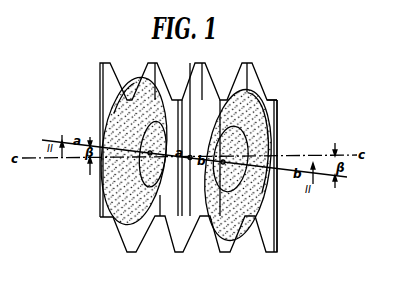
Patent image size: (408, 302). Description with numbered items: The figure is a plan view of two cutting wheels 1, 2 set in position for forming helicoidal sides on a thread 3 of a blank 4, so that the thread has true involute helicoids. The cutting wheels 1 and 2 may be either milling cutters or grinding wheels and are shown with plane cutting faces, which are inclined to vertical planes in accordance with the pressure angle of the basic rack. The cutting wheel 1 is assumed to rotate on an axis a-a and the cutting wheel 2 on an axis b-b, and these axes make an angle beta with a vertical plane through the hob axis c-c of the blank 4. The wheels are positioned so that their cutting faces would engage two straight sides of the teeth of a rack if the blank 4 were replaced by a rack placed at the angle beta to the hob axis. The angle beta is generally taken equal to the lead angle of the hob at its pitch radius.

The cutting wheel 1 is at (115, 218).
The cutting wheel 2 is at (241, 241).
The thread 3 is at (245, 63).
The blank 4 is at (274, 100).